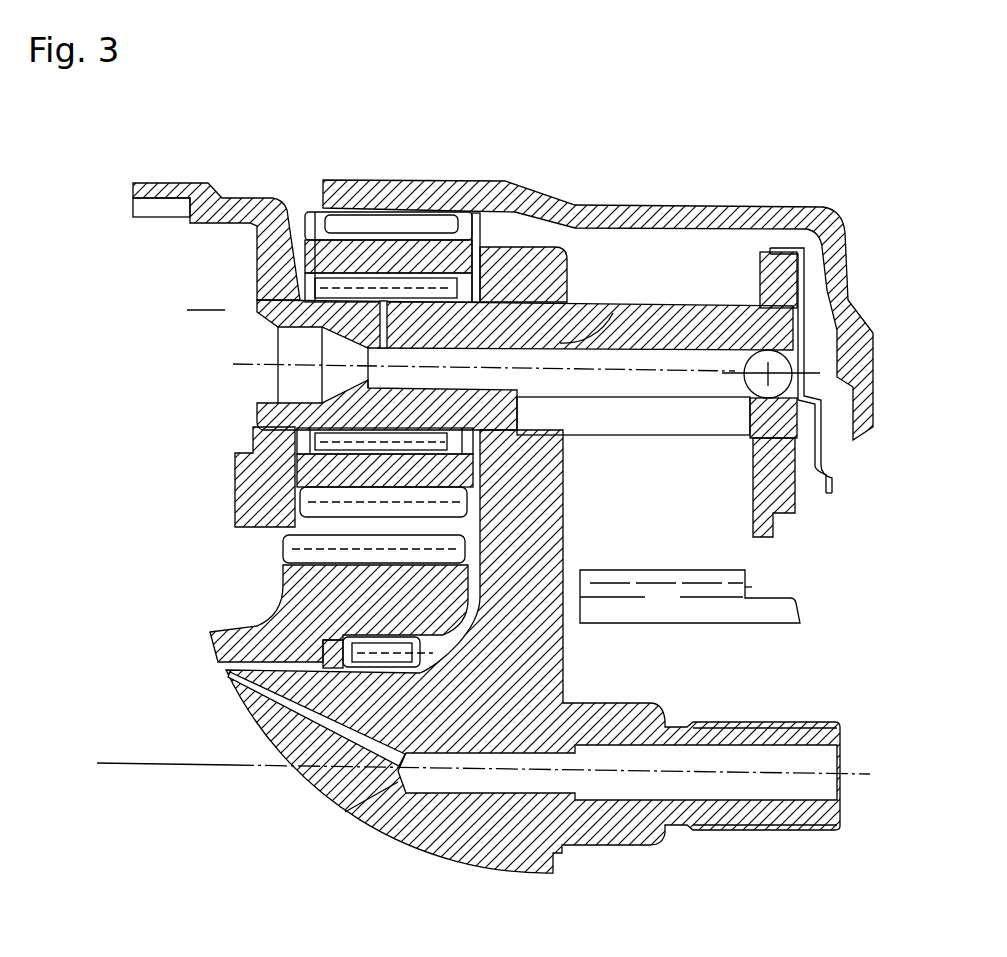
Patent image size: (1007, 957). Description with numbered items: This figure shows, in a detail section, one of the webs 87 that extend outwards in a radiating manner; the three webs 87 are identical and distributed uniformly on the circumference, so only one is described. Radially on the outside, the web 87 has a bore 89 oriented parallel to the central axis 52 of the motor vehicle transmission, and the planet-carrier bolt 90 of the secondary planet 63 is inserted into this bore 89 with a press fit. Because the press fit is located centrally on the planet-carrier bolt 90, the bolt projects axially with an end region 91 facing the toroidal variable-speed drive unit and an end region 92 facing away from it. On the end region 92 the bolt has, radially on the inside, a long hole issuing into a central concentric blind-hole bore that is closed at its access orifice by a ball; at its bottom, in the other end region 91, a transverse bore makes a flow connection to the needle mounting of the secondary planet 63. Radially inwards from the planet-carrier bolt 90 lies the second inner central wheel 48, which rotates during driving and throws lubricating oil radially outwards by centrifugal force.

The second inner central wheel 48 is at (678, 613).
The central axis 52 is at (163, 766).
The secondary planet 63 is at (396, 271).
The web 87 is at (527, 483).
The bore 89 is at (613, 313).
The planet-carrier bolt 90 is at (669, 339).
The end region 91 is at (325, 458).
The end region 92 is at (697, 283).